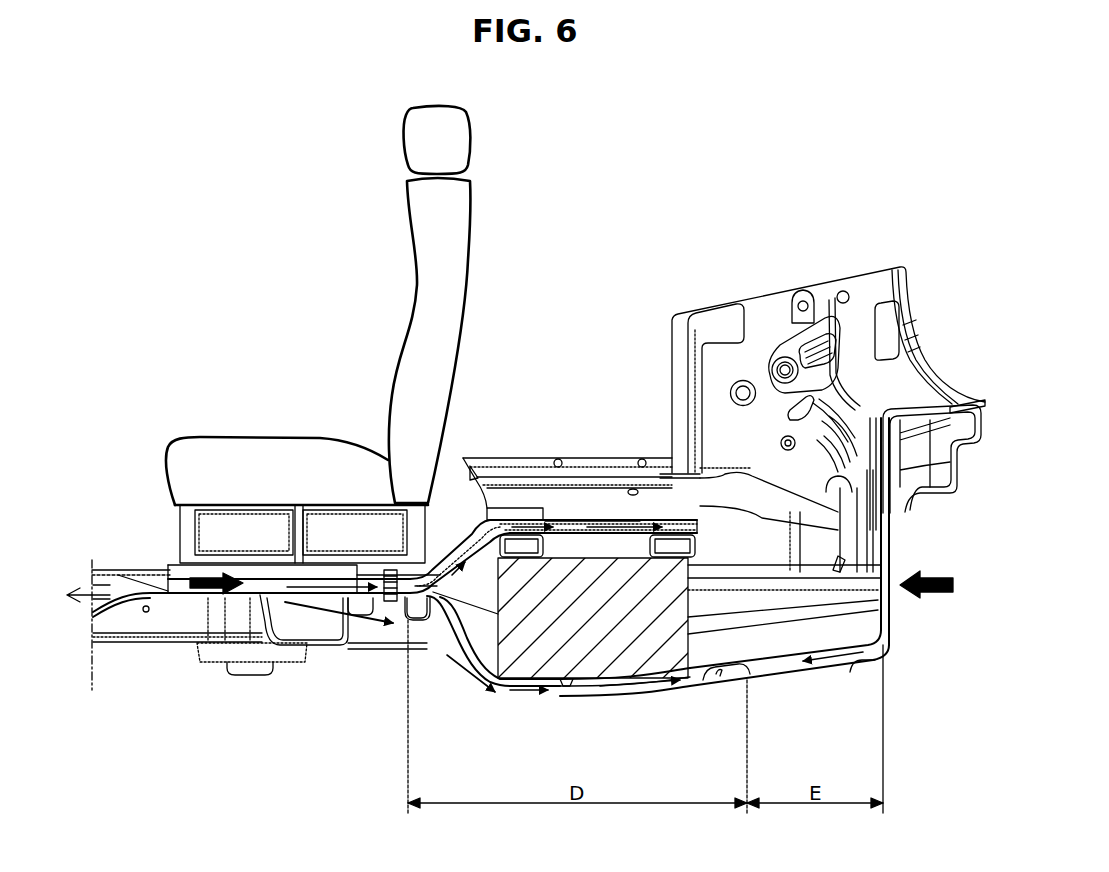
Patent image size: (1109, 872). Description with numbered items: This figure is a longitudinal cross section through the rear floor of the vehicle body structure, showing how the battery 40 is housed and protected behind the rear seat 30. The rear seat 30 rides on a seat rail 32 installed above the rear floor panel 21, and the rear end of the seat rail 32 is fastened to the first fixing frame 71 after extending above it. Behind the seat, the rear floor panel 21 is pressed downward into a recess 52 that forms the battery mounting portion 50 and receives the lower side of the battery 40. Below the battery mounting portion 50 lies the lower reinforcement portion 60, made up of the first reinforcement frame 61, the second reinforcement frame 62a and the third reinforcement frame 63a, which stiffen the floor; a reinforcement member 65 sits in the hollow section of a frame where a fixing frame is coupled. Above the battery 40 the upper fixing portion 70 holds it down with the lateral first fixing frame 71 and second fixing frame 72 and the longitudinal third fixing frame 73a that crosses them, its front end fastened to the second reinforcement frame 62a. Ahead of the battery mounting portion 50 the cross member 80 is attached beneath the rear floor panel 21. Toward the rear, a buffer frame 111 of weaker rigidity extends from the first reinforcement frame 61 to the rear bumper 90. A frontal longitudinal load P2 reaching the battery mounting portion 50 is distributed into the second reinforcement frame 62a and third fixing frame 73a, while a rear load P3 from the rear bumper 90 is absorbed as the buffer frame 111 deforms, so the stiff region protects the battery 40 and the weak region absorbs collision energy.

The rear seat 30 is at (422, 302).
The seat rail 32 is at (343, 573).
The rear floor panel 21 is at (280, 590).
The battery 40 is at (673, 617).
The battery mounting portion 50 is at (507, 670).
The recess 52 is at (585, 670).
The lower reinforcement portion 60 is at (487, 704).
The first reinforcement frame 61 is at (713, 670).
The second reinforcement frame 62a is at (633, 690).
The third reinforcement frame 63a is at (567, 683).
The reinforcement member 65 is at (420, 624).
The upper fixing portion 70 is at (607, 518).
The first fixing frame 71 is at (522, 544).
The second fixing frame 72 is at (676, 544).
The third fixing frame 73a is at (580, 522).
The cross member 80 is at (267, 634).
The rear bumper 90 is at (910, 508).
The buffer frame 111 is at (810, 660).
The longitudinal direction load P2 is at (198, 597).
The longitudinal direction load P3 is at (937, 594).